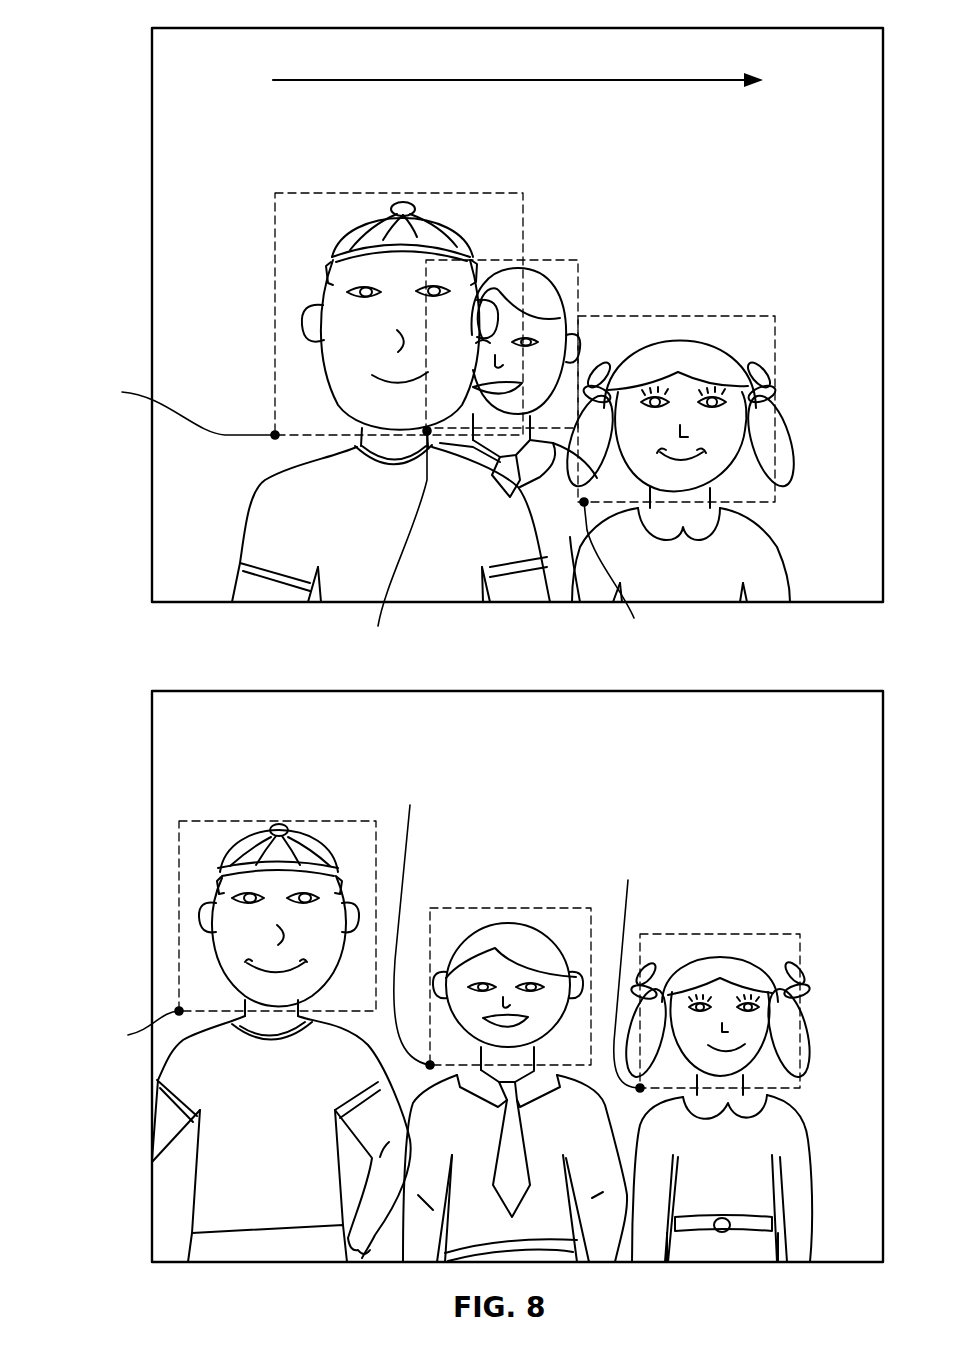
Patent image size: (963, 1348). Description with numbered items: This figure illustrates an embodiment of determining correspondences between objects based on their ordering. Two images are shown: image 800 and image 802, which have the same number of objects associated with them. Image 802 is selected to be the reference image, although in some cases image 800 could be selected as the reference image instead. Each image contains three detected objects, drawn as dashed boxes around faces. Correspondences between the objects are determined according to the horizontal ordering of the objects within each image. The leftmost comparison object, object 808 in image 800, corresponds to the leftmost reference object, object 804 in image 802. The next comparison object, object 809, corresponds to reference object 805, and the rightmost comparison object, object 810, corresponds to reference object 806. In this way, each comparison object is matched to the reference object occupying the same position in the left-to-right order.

The image 800 is at (226, 28).
The image 802 is at (226, 691).
The object 804 is at (250, 821).
The object 805 is at (502, 908).
The object 806 is at (712, 934).
The object 808 is at (345, 193).
The object 809 is at (548, 260).
The object 810 is at (672, 316).